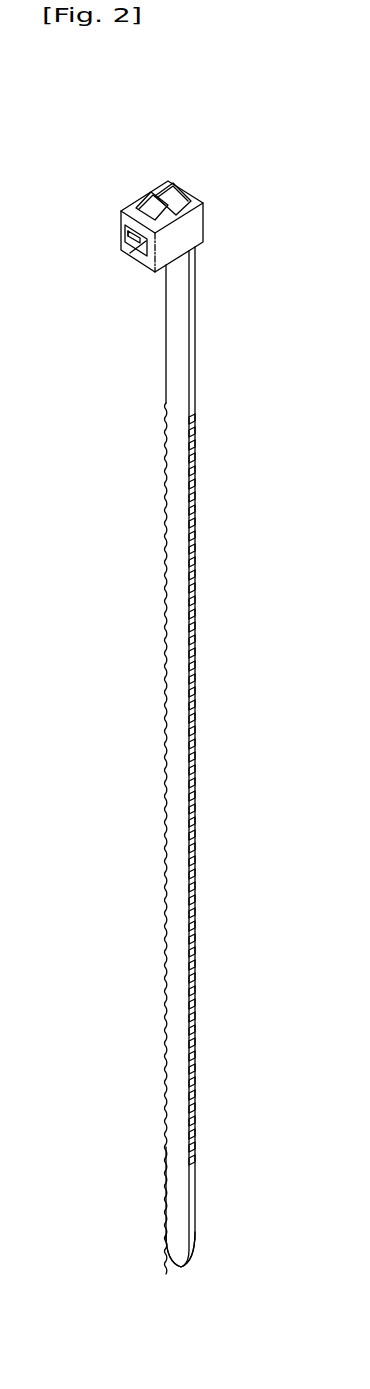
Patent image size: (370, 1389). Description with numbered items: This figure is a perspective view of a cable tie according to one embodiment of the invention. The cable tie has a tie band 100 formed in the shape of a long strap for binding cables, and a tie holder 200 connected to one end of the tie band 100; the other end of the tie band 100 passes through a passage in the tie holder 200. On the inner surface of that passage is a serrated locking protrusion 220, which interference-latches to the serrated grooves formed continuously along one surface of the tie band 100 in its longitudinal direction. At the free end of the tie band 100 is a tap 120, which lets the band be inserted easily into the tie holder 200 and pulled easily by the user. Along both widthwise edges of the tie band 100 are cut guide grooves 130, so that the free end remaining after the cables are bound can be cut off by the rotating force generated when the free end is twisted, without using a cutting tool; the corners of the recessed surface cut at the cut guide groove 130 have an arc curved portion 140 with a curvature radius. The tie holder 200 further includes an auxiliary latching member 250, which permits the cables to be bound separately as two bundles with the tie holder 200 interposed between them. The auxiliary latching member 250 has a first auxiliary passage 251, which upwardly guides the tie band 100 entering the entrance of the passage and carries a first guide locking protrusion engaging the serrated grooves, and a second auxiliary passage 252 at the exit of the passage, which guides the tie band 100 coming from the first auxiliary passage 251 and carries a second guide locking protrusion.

The tie band 100 is at (179, 760).
The tap 120 is at (195, 1212).
The cut guide grooves 130 is at (163, 785).
The arc curved portion 140 is at (195, 612).
The tie holder 200 is at (197, 227).
The serrated locking protrusion 220 is at (125, 253).
The auxiliary latching member 250 is at (149, 151).
The first auxiliary passage 251 is at (171, 198).
The second auxiliary passage 252 is at (143, 201).